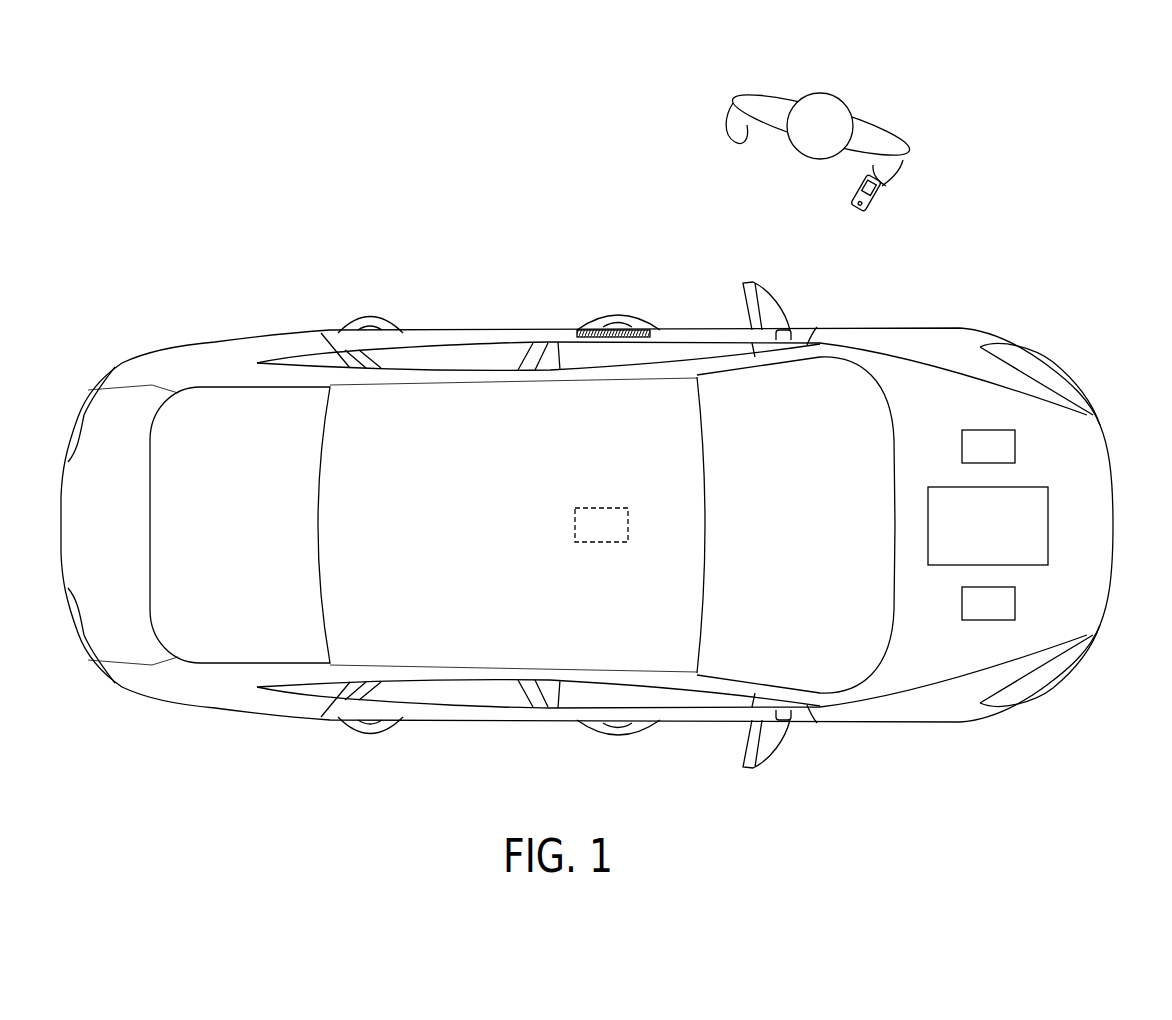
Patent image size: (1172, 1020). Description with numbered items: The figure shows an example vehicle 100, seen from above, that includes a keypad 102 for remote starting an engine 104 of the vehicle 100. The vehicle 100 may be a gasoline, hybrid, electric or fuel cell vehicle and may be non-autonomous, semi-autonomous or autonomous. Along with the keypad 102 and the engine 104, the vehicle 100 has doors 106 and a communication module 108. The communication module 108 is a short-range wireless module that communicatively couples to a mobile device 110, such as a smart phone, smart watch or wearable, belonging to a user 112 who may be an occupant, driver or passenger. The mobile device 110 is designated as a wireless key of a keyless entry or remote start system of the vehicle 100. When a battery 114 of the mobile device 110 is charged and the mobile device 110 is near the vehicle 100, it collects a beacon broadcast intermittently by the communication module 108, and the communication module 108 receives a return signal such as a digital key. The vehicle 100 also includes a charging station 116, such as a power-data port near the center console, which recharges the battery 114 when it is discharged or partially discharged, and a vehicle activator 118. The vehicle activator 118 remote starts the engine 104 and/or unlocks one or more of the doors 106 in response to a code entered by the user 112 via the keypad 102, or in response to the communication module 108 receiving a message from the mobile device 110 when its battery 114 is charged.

The vehicle 100 is at (138, 322).
The keypad 102 is at (660, 328).
The engine 104 is at (988, 526).
The doors 106 is at (443, 330).
The communication module 108 is at (988, 446).
The mobile device 110 is at (880, 205).
The user 112 is at (898, 108).
The battery 114 is at (847, 190).
The charging station 116 is at (601, 525).
The vehicle activator 118 is at (988, 603).